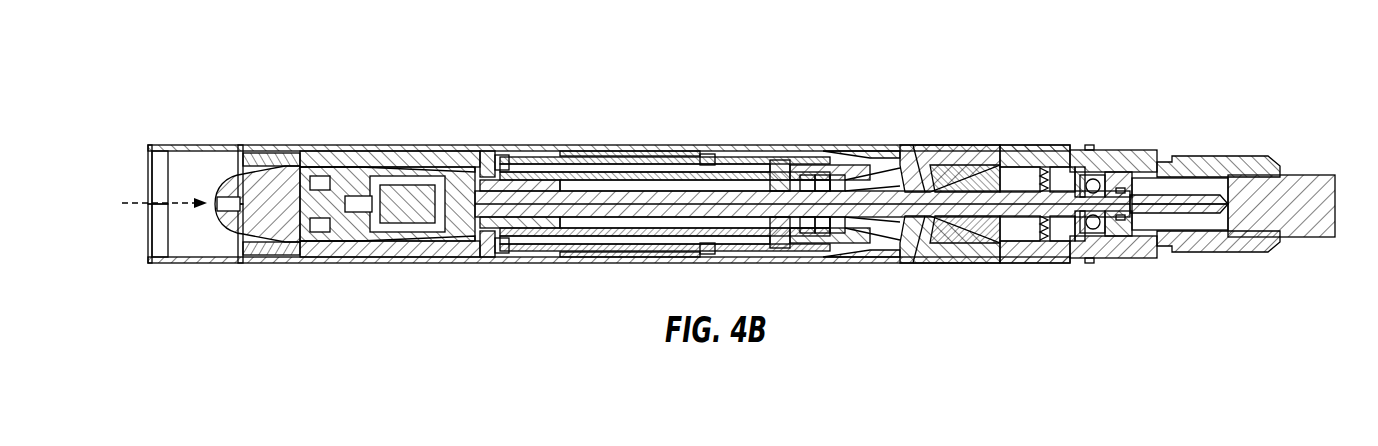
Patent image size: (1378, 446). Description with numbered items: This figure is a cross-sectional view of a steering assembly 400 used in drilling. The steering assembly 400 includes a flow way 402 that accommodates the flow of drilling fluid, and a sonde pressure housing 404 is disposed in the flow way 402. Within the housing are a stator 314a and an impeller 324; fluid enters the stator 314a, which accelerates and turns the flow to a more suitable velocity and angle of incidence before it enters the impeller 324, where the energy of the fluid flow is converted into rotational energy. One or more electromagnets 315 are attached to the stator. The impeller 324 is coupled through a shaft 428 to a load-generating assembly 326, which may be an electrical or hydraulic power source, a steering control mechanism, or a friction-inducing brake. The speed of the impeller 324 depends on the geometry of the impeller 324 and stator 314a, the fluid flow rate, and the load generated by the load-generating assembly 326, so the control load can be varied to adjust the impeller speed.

The steering assembly 400 is at (210, 64).
The flow way 402 is at (128, 202).
The sonde pressure housing 404 is at (262, 144).
The stator 314a is at (411, 142).
The electromagnets 315 is at (418, 231).
The impeller 324 is at (618, 146).
The shaft 428 is at (922, 200).
The load-generating assembly 326 is at (1300, 184).